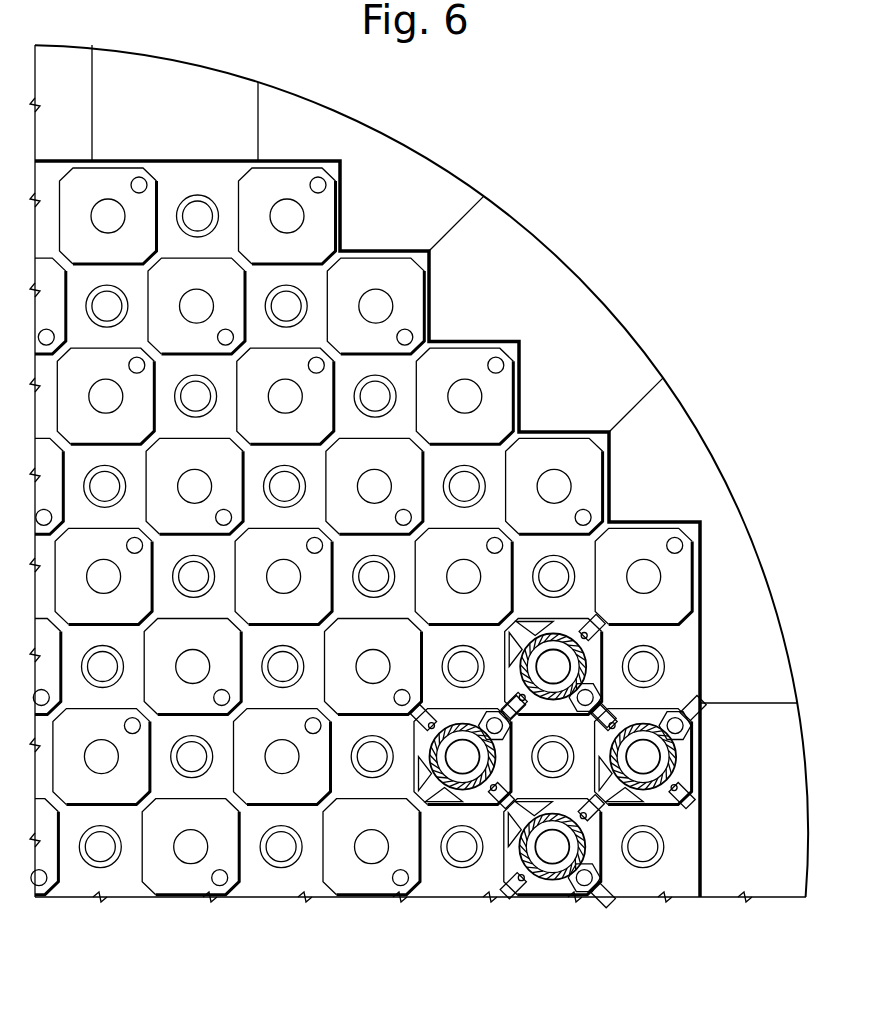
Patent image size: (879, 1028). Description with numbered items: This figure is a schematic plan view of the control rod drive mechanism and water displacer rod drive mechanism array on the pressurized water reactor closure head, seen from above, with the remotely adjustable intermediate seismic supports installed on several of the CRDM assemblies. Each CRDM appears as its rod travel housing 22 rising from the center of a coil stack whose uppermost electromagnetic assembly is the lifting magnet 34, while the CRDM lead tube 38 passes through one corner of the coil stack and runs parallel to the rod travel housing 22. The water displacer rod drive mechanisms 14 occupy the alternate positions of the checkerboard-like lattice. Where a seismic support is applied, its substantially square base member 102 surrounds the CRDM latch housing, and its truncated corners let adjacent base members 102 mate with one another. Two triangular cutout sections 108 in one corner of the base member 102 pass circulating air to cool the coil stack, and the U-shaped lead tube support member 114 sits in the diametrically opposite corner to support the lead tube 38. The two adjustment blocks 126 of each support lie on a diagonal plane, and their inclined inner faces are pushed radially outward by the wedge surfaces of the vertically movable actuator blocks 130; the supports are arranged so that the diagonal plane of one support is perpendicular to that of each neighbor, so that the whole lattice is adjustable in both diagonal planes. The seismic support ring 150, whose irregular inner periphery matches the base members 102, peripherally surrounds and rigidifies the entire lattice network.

The water displacer rod drive mechanism 14 is at (475, 478).
The rod travel housing 22 is at (572, 484).
The lifting magnet 34 is at (418, 279).
The CRDM lead tube 38 is at (676, 537).
The base member 102 is at (596, 654).
The triangularly configured cutout section 108 is at (628, 802).
The lead tube support member 114 is at (674, 712).
The adjustment block 126 is at (593, 626).
The actuator block 130 is at (677, 780).
The seismic support ring 150 is at (408, 158).